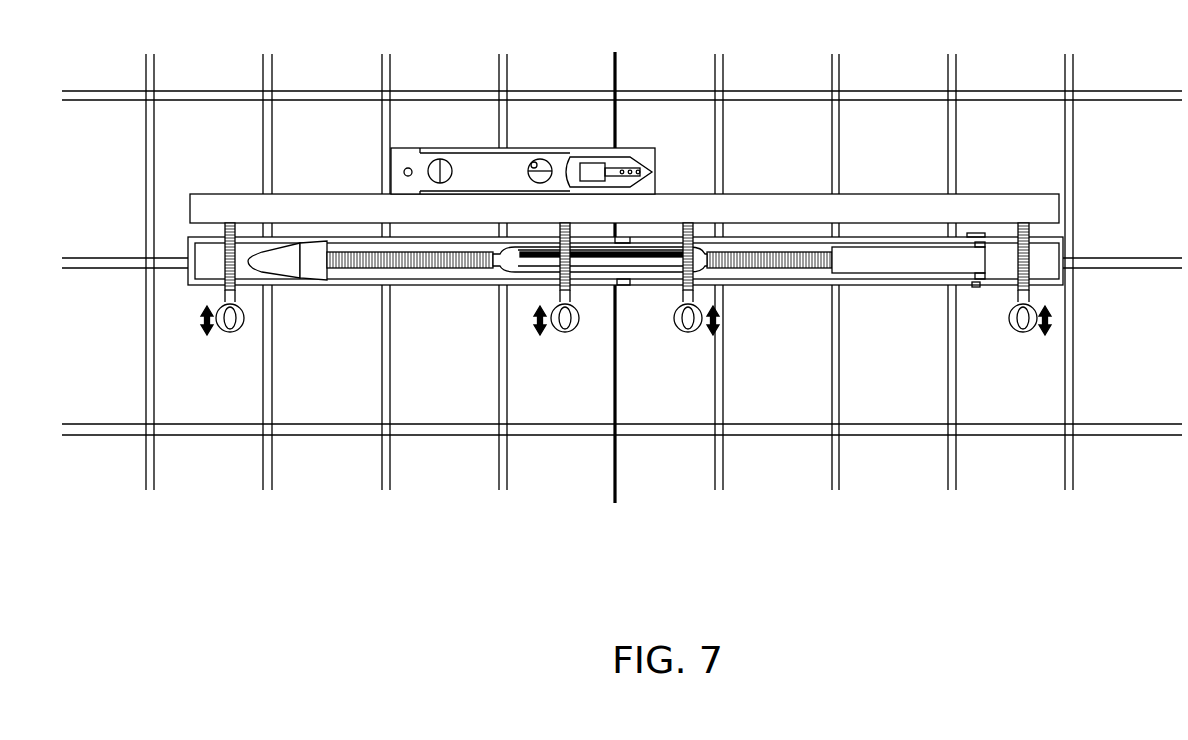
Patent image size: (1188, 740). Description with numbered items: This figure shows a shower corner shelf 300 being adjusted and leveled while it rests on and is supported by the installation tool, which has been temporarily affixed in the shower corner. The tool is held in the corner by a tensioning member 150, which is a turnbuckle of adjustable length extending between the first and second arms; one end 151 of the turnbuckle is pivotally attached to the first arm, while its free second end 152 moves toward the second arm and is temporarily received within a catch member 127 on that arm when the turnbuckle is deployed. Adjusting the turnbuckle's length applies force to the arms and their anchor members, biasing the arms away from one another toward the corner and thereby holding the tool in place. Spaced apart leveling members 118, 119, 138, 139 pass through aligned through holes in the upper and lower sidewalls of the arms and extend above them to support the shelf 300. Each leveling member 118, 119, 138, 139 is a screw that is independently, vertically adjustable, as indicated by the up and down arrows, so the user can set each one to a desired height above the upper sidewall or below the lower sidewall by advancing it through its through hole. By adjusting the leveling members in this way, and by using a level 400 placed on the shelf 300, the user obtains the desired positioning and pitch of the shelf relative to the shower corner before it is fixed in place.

The shower corner shelf 300 is at (252, 205).
The level 400 is at (482, 165).
The leveling member 138 is at (225, 240).
The catch member 127 is at (277, 260).
The second end 152 is at (317, 262).
The leveling member 139 is at (560, 228).
The tensioning member 150 is at (587, 265).
The leveling member 119 is at (693, 232).
The one end 151 is at (925, 262).
The leveling member 118 is at (1017, 232).